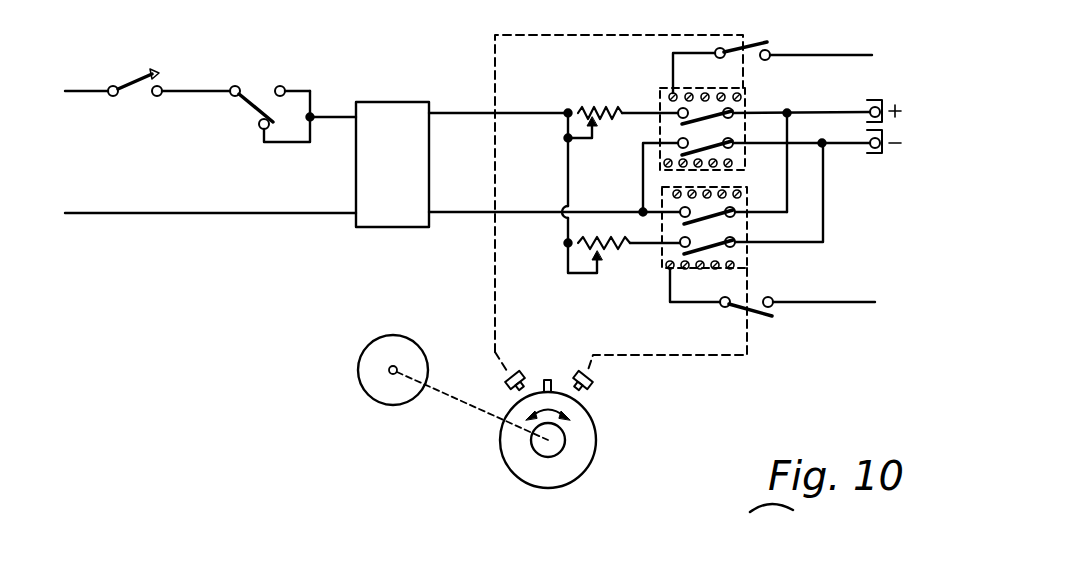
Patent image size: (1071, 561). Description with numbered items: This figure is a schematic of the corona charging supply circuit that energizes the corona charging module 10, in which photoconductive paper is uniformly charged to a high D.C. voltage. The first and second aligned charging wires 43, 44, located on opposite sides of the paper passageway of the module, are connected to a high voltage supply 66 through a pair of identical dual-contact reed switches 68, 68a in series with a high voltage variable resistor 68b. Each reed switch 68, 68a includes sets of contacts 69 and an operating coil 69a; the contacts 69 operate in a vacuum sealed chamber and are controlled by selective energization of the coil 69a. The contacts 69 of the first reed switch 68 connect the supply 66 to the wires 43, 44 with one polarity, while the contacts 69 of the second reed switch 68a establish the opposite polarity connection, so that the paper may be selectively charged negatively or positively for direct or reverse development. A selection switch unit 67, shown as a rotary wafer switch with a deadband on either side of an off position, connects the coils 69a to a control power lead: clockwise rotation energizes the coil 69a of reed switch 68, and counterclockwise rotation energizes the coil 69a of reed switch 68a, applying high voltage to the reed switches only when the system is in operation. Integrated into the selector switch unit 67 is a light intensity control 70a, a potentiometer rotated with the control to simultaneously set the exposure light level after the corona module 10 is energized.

The corona charging module 10 is at (912, 93).
The first charging wire 43 is at (878, 100).
The second charging wire 44 is at (877, 154).
The high voltage supply 66 is at (408, 110).
The selection switch unit 67 is at (497, 472).
The first dual-contact reed switch 68 is at (750, 96).
The second dual-contact reed switch 68a is at (748, 252).
The high voltage variable resistor 68b is at (613, 250).
The contacts 69 is at (678, 116).
The operating coil 69a is at (672, 92).
The light intensity control 70a is at (385, 403).